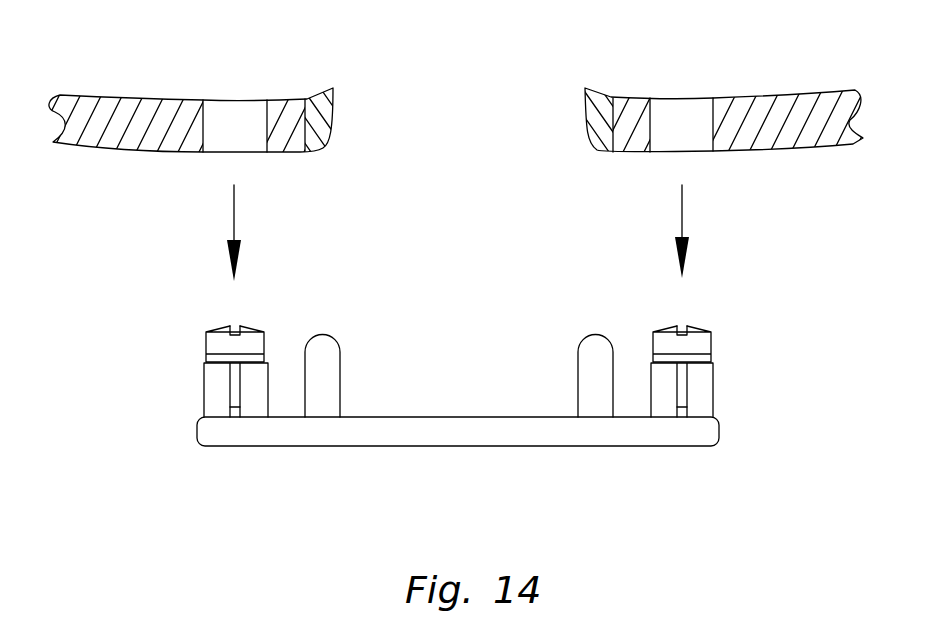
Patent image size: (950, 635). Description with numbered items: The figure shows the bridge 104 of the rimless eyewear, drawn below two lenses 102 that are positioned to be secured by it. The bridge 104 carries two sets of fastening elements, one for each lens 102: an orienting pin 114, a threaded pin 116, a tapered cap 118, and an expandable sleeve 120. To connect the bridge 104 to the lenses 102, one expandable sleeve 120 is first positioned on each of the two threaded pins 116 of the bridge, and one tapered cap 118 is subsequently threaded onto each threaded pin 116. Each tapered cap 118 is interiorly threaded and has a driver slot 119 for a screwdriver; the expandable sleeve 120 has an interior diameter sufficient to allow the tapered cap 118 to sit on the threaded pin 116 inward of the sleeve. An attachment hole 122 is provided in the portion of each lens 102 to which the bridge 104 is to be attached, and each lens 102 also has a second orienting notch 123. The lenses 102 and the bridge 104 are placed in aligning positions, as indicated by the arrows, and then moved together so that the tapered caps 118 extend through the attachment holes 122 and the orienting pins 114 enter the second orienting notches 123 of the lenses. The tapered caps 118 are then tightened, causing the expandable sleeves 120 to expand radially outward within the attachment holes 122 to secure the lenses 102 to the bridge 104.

The lens 102 is at (100, 95).
The attachment hole 122 is at (240, 100).
The second orienting notch 123 is at (333, 115).
The bridge 104 is at (463, 326).
The orienting pin 114 is at (324, 334).
The threaded pin 116 is at (235, 418).
The tapered cap 118 is at (207, 342).
The driver slot 119 is at (235, 327).
The expandable sleeve 120 is at (217, 393).